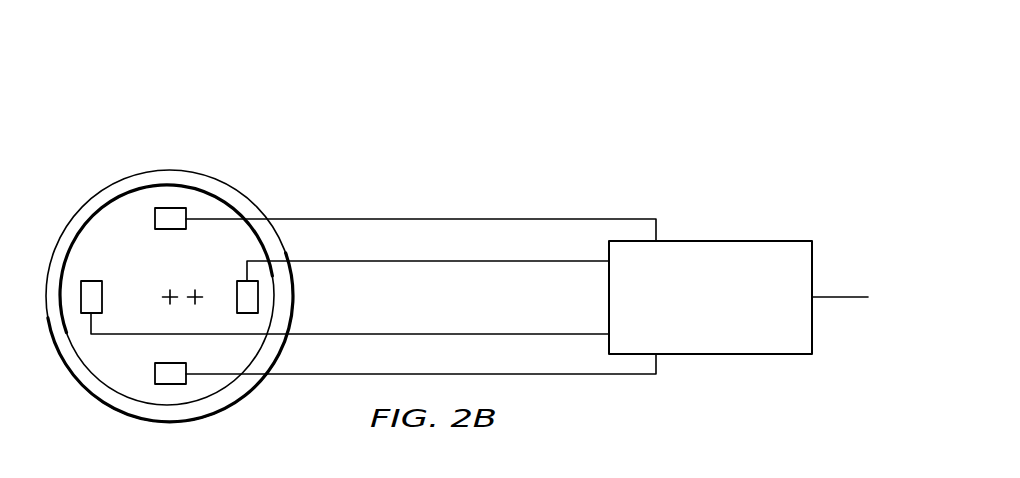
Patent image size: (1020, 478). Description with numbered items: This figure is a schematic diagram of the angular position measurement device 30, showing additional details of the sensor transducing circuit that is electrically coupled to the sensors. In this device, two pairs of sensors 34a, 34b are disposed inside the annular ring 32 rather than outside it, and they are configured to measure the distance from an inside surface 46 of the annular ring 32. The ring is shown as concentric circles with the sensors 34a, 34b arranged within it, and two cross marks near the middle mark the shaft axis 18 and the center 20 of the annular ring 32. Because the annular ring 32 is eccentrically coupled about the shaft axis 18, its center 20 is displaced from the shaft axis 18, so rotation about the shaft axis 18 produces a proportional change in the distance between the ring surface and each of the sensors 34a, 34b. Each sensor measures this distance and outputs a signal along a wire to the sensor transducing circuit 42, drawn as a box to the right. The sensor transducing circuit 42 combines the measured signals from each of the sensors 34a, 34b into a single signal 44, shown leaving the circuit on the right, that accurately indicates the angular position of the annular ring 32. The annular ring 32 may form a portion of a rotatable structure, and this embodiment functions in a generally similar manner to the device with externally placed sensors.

The angular position measurement device 30 is at (518, 188).
The annular ring 32 is at (228, 193).
The inside surface 46 is at (124, 213).
The first pair of sensors 34a is at (170, 207).
The second pair of sensors 34b is at (98, 280).
The shaft axis 18 is at (202, 294).
The center of the annular ring 20 is at (162, 298).
The sensor transducing circuit 42 is at (745, 241).
The single signal 44 is at (840, 297).